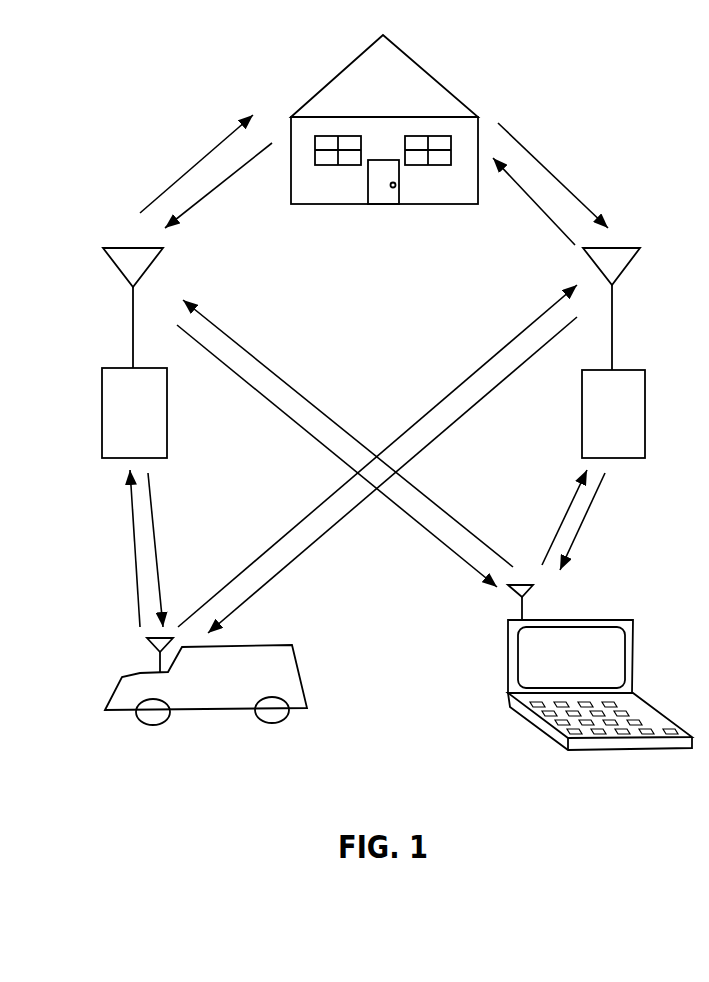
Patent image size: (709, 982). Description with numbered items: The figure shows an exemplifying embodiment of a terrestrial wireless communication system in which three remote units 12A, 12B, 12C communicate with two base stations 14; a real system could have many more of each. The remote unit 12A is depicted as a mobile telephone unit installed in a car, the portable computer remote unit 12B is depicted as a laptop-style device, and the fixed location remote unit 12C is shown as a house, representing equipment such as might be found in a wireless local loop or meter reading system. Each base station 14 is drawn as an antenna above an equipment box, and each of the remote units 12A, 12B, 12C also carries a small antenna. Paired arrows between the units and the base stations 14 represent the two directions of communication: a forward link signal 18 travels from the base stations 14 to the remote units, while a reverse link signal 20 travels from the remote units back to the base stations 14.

The remote unit 12A is at (303, 668).
The portable computer remote unit 12B is at (617, 617).
The fixed location remote unit 12C is at (432, 73).
The base station 14 is at (115, 367).
The forward link signal 18 is at (197, 162).
The reverse link signal 20 is at (223, 182).